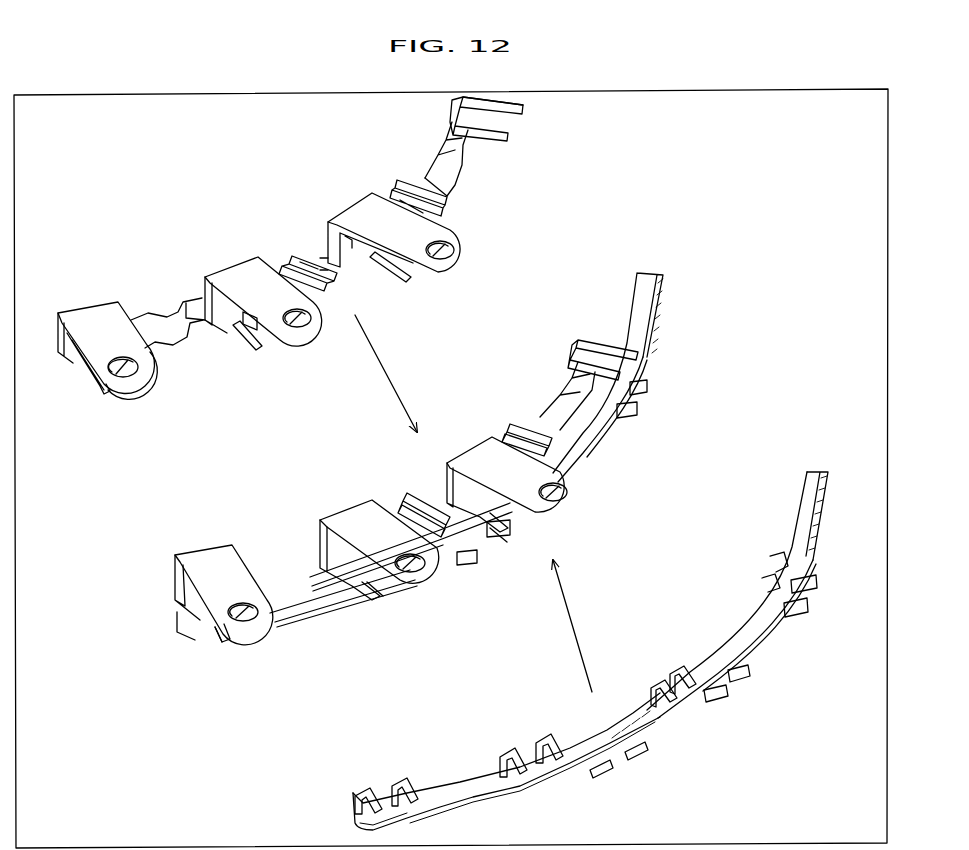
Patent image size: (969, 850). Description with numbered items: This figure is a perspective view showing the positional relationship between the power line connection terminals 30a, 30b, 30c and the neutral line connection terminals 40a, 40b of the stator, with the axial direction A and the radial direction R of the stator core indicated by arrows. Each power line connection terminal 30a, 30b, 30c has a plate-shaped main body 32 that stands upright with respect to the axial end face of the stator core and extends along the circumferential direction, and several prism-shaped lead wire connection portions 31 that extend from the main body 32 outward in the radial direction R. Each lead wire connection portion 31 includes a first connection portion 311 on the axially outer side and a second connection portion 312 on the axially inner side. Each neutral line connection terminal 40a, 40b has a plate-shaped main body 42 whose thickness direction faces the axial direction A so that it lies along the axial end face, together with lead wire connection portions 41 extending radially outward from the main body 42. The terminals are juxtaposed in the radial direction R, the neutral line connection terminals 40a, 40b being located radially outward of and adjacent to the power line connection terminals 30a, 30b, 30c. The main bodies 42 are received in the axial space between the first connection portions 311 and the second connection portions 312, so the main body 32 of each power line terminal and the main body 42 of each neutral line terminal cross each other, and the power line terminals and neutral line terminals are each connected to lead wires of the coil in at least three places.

The power line connection terminal 30a is at (78, 292).
The power line connection terminal 30b is at (222, 251).
The power line connection terminal 30c is at (352, 195).
The lead wire connection portion 31 is at (600, 340).
The first connection portion 311 is at (493, 101).
The second connection portion 312 is at (361, 585).
The main body 32 is at (545, 395).
The neutral line connection terminal 40a is at (558, 782).
The neutral line connection terminal 40b is at (778, 637).
The lead wire connection portion 41 is at (650, 392).
The main body 42 is at (606, 440).
The axial direction A is at (745, 258).
The radial direction R is at (135, 668).